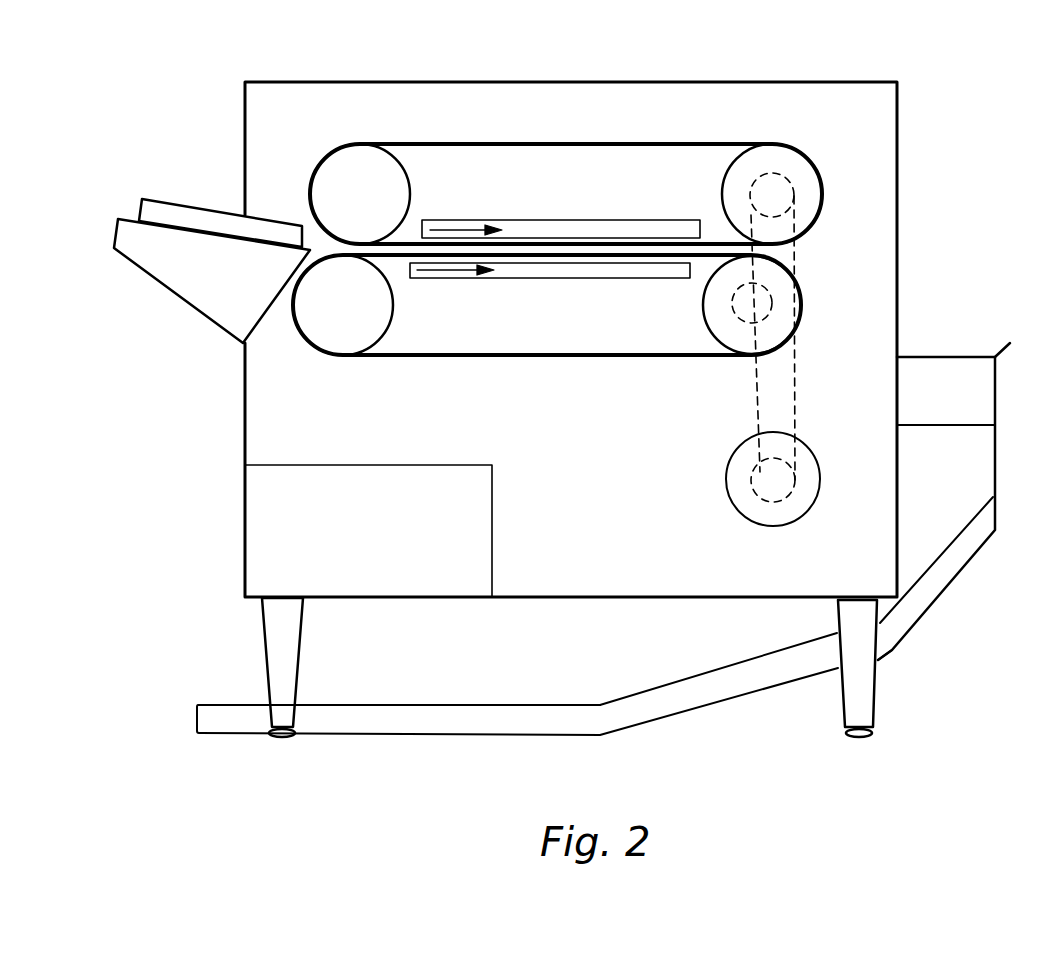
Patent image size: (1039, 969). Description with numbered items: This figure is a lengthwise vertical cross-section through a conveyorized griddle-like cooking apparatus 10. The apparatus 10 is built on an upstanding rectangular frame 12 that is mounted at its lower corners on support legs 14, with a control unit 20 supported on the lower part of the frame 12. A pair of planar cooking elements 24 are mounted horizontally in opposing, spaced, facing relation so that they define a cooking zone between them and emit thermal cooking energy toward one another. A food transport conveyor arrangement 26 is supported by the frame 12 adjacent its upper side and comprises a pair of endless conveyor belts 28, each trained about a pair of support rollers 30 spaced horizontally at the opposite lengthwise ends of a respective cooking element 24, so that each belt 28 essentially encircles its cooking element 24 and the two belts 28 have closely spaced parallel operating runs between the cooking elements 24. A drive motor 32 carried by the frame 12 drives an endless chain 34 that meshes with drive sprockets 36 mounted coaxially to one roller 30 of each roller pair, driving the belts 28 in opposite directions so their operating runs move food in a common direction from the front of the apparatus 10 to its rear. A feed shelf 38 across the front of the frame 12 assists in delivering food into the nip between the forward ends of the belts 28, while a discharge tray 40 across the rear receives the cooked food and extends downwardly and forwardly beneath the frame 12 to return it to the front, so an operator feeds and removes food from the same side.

The griddle apparatus 10 is at (178, 100).
The frame 12 is at (243, 569).
The support legs 14 is at (275, 627).
The control unit 20 is at (268, 531).
The cooking elements 24 is at (543, 228).
The food transport conveyor arrangement 26 is at (300, 148).
The endless conveyor belts 28 is at (667, 143).
The support rollers 30 is at (347, 172).
The drive motor 32 is at (735, 495).
The endless chain 34 is at (797, 395).
The drive sprockets 36 is at (803, 150).
The feed shelf 38 is at (158, 198).
The discharge tray 40 is at (948, 560).